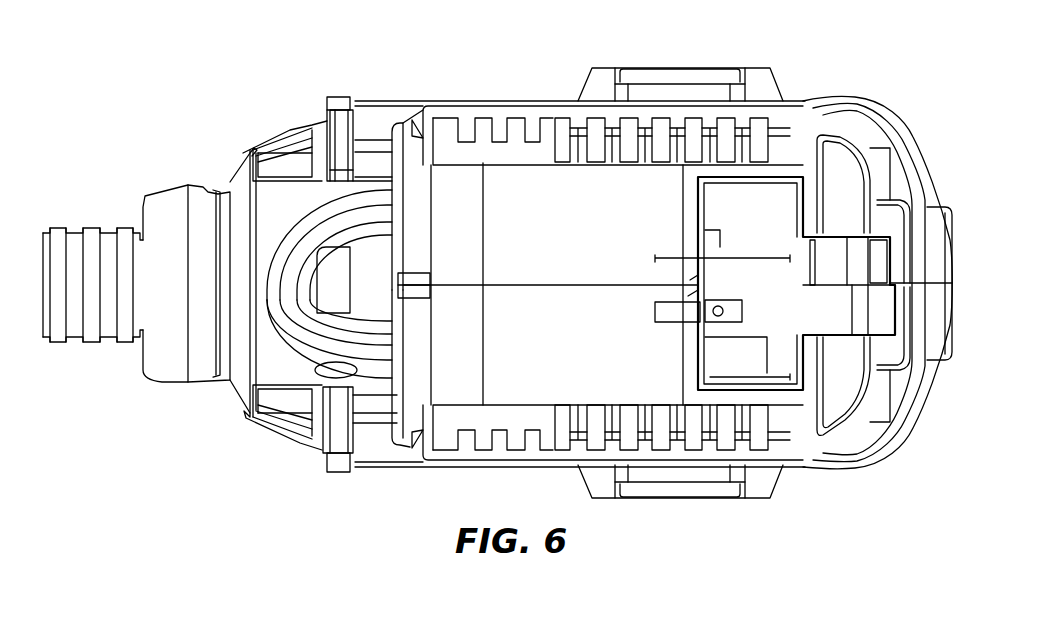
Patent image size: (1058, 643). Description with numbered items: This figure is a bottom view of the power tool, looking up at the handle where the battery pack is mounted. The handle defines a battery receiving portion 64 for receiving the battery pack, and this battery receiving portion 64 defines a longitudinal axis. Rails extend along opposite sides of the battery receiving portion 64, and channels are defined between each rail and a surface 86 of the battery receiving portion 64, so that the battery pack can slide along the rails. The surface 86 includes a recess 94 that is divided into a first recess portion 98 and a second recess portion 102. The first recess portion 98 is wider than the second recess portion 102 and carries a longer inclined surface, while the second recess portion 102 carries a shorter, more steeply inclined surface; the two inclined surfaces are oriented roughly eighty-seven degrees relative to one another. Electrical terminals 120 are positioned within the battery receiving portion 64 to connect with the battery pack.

The battery receiving portion 64 is at (408, 203).
The surface 86 is at (546, 200).
The recess 94 is at (461, 185).
The first recess portion 98 is at (440, 326).
The second recess portion 102 is at (395, 282).
The electrical terminals 120 is at (715, 377).